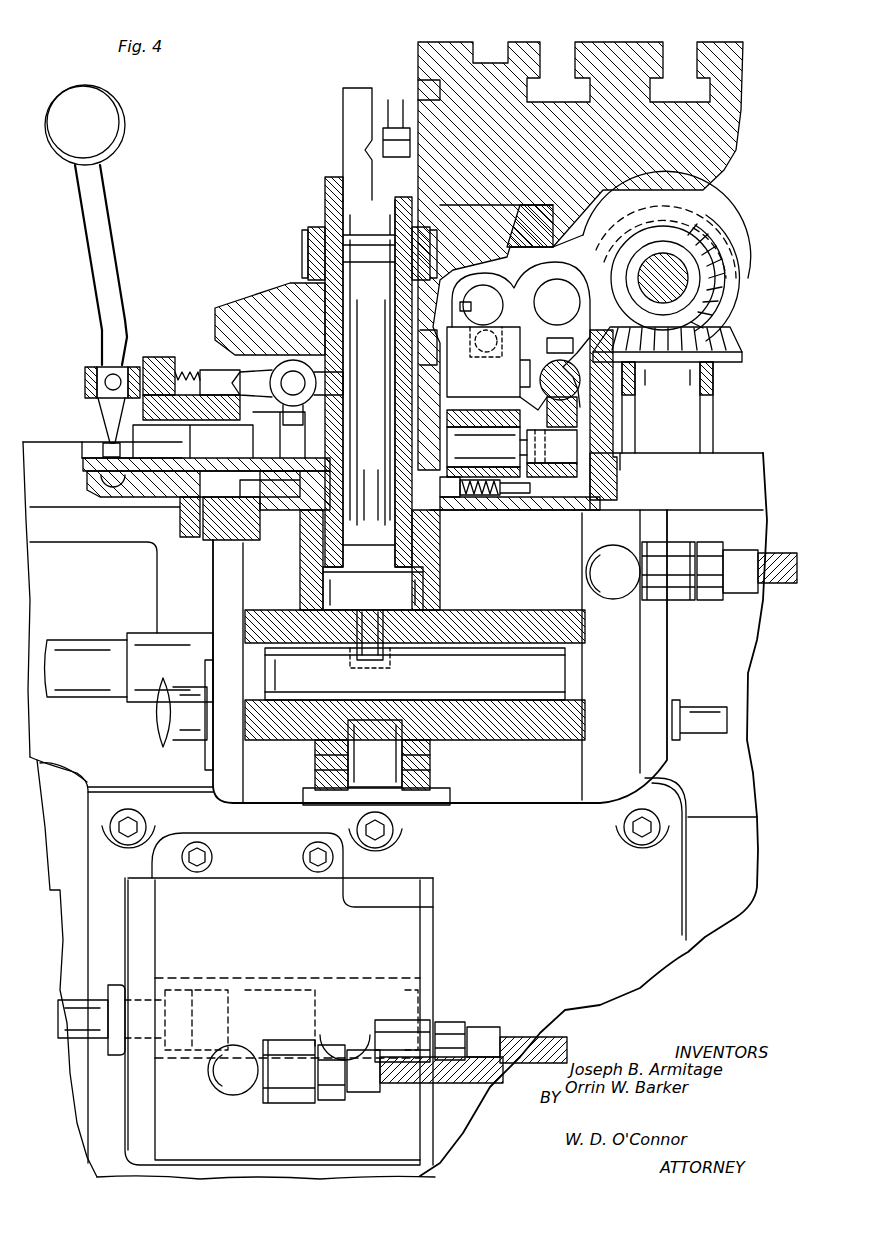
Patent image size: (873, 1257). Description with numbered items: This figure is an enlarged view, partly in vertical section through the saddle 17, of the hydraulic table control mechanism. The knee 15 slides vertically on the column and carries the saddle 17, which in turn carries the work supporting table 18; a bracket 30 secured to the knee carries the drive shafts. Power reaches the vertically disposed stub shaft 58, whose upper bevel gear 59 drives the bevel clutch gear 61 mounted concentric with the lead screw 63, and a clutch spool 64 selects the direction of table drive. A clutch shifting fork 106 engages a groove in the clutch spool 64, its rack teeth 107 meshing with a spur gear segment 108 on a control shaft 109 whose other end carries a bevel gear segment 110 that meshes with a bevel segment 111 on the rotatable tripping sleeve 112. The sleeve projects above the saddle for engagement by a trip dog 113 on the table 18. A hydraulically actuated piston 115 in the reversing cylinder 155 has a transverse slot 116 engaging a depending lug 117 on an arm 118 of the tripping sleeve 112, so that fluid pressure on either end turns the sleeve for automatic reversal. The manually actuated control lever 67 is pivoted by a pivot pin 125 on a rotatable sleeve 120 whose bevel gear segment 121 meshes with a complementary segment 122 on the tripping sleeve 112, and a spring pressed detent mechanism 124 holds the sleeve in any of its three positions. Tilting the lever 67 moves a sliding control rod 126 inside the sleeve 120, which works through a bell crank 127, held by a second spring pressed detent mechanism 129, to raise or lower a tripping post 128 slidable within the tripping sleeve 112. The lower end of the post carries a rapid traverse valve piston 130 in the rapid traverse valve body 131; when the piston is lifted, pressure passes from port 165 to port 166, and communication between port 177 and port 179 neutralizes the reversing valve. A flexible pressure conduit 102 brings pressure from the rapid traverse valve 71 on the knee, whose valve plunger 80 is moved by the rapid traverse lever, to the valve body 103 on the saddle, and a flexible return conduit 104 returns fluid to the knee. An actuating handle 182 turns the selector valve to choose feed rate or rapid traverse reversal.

The knee 15 is at (72, 857).
The saddle 17 is at (243, 297).
The work supporting table 18 is at (568, 47).
The bracket 30 is at (702, 927).
The stub shaft 58 is at (687, 411).
The bevel gear 59 is at (730, 342).
The bevel clutch gear 61 is at (732, 285).
The lead screw 63 is at (647, 269).
The clutch spool 64 is at (713, 248).
The control lever 67 is at (100, 124).
The rapid traverse valve 71 is at (130, 1121).
The valve plunger 80 is at (57, 1000).
The flexible pressure conduit 102 is at (788, 550).
The valve body 103 is at (623, 622).
The flexible return conduit 104 is at (407, 1087).
The clutch shifting fork 106 is at (687, 213).
The rack teeth 107 is at (577, 400).
The spur gear segment 108 is at (570, 417).
The control shaft 109 is at (567, 441).
The bevel gear segment 110 is at (427, 383).
The bevel segment 111 is at (433, 372).
The tripping sleeve 112 is at (325, 193).
The trip dog 113 is at (408, 127).
The piston 115 is at (458, 655).
The transverse slot 116 is at (352, 652).
The lug 117 is at (353, 668).
The arm 118 is at (377, 590).
The rotatable sleeve 120 is at (160, 497).
The bevel gear segment 121 is at (342, 472).
The bevel segment 122 is at (338, 495).
The spring pressed detent mechanism 124 is at (455, 490).
The pivot pin 125 is at (105, 384).
The sliding control rod 126 is at (225, 445).
The bell crank 127 is at (320, 378).
The tripping post 128 is at (366, 300).
The spring pressed detent mechanism 129 is at (193, 322).
The rapid traverse valve piston 130 is at (352, 790).
The rapid traverse valve body 131 is at (427, 776).
The reversing cylinder 155 is at (287, 730).
The port 165 is at (423, 689).
The port 166 is at (407, 722).
The port 177 is at (420, 762).
The port 179 is at (333, 768).
The actuating handle 182 is at (163, 723).